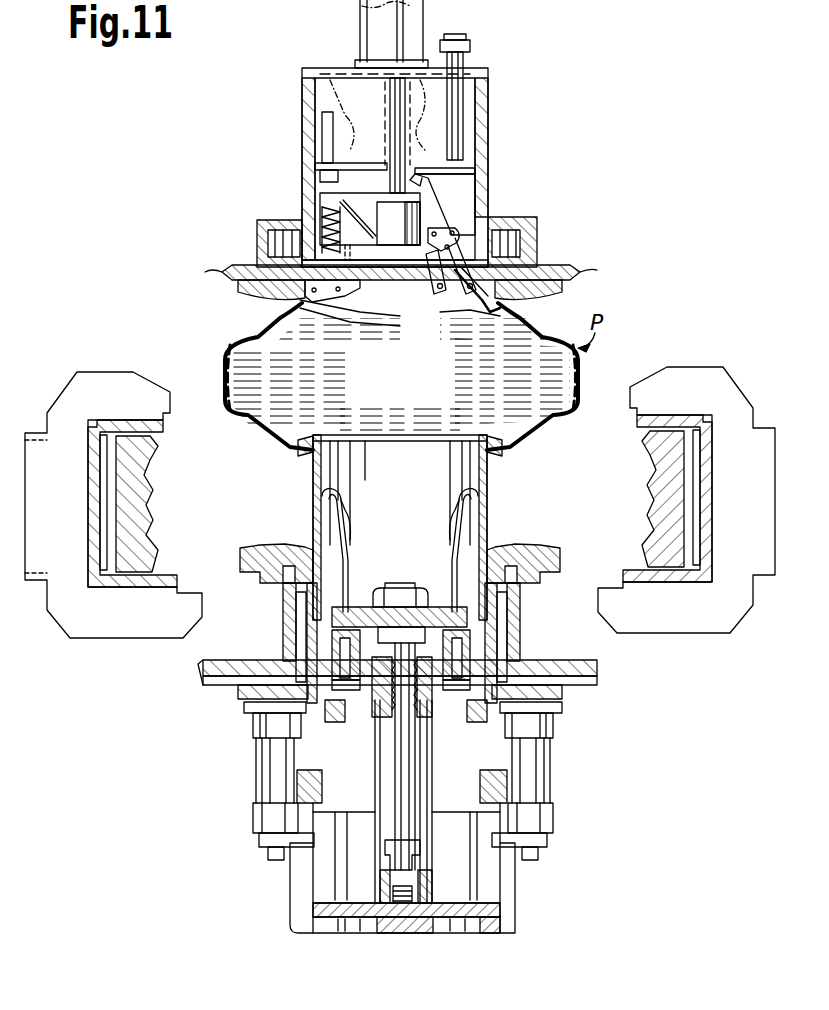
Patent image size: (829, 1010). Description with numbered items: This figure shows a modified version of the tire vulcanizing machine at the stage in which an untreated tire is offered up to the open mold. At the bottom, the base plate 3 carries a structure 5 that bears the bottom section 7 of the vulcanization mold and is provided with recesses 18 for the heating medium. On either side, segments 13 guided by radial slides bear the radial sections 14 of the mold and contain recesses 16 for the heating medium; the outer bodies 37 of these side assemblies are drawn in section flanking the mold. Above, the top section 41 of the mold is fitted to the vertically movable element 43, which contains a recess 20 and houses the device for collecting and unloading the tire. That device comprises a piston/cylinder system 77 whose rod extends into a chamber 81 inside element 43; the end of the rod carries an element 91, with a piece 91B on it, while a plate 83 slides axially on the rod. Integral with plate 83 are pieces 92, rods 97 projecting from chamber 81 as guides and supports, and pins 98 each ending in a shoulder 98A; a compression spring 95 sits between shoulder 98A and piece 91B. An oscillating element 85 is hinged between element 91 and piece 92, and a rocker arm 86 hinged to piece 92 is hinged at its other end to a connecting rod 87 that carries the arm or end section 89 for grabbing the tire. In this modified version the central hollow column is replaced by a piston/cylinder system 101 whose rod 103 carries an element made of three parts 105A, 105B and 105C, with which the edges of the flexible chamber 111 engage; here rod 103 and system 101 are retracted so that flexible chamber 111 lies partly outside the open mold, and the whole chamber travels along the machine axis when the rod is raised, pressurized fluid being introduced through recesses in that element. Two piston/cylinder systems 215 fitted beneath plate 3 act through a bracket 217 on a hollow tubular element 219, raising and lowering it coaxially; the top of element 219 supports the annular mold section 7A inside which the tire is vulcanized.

The piston/cylinder system 77 is at (365, 29).
The element 43 is at (500, 84).
The chamber 81 is at (322, 88).
The rods 97 is at (463, 138).
The plate 83 is at (320, 168).
The pins 98 is at (318, 187).
The compression spring 95 is at (320, 212).
The piece 91B is at (375, 135).
The element 91 is at (402, 232).
The piece 92 is at (462, 184).
The oscillating element 85 is at (436, 282).
The rocker arm 86 is at (467, 311).
The connecting rod 87 is at (330, 327).
The shoulder 98A is at (322, 256).
The recess 20 is at (515, 240).
The section 41 is at (553, 287).
The arm or end section 89 is at (262, 336).
The annular section 7A is at (301, 460).
The hollow tubular element 219 is at (488, 480).
The flexible chamber 111 is at (468, 516).
The bottom section 7 is at (272, 548).
The structure 5 is at (285, 624).
The recess 18 is at (504, 612).
The part of element 105 105A is at (443, 596).
The part of element 105 105B is at (450, 657).
The part of element 105 105C is at (337, 728).
The rod 103 is at (397, 720).
The plate 3 is at (599, 670).
The piston/cylinder systems 215 is at (258, 778).
The bracket 217 is at (258, 845).
The piston/cylinder system 101 is at (377, 821).
The clamp body 37 is at (121, 630).
The segments 13 is at (81, 437).
The recesses 16 is at (700, 498).
The radial sections 14 is at (140, 522).